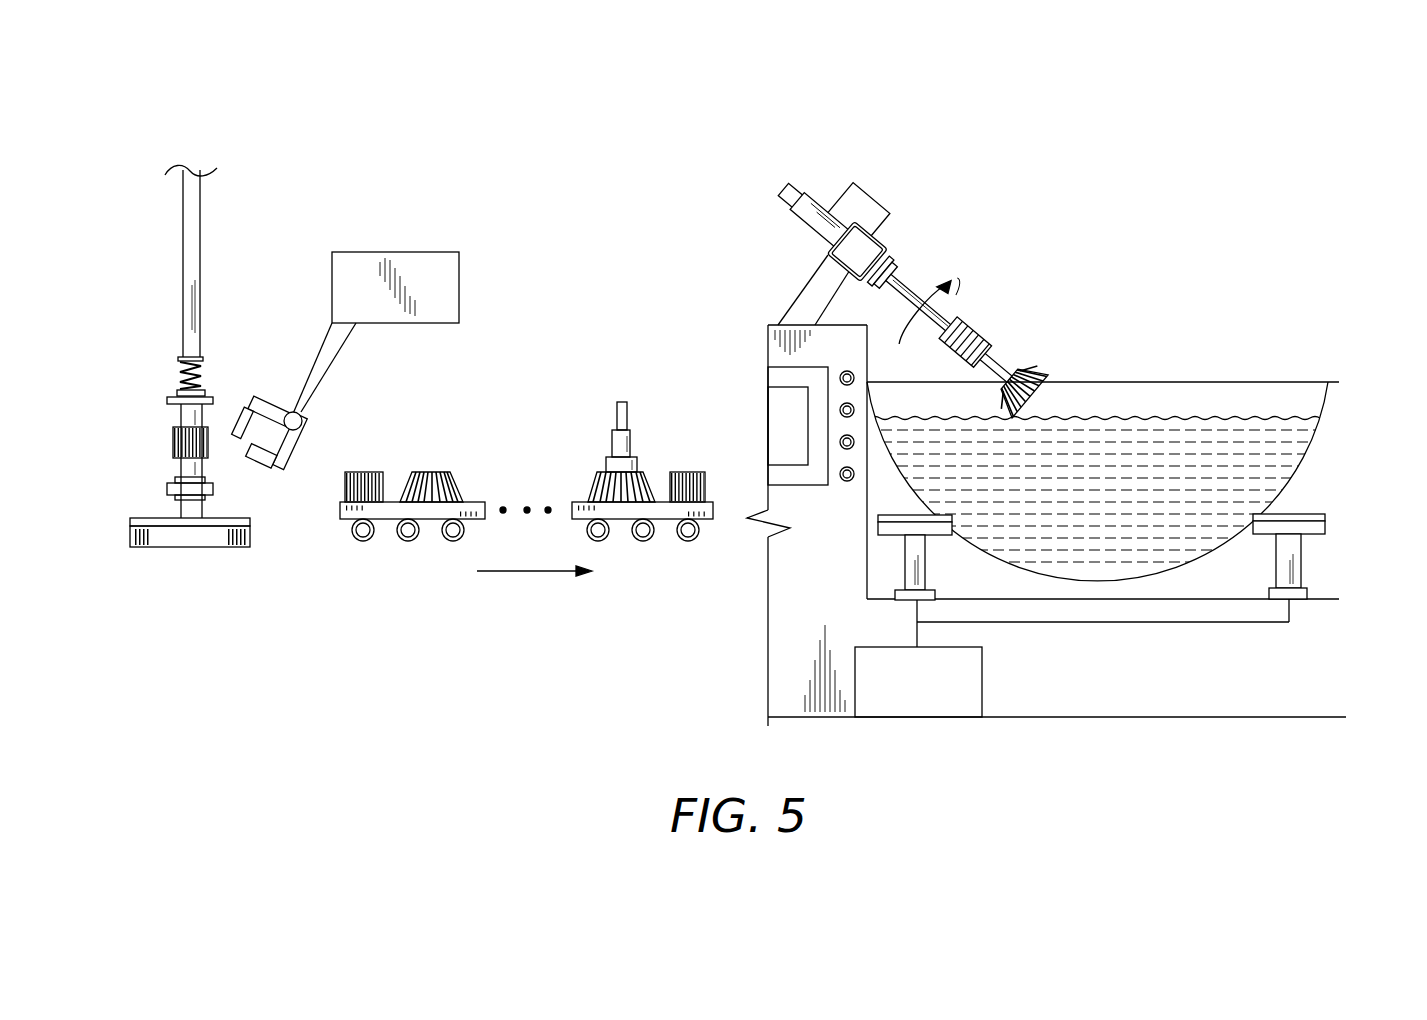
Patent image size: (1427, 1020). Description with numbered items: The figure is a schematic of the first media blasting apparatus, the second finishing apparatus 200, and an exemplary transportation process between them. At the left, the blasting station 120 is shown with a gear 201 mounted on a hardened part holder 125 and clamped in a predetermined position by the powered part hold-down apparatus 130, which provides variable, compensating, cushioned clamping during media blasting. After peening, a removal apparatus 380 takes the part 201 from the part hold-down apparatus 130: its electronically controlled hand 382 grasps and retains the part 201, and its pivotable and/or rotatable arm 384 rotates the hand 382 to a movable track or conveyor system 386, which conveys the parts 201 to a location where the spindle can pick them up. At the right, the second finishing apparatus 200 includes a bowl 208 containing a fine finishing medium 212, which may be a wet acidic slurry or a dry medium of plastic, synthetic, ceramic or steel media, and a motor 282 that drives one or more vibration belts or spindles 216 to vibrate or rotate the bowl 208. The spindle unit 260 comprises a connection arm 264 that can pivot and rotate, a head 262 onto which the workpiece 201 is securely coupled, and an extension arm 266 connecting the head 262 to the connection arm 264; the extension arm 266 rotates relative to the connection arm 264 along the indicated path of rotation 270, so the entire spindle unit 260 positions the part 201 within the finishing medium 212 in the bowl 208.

The blasting station 120 is at (156, 232).
The powered part hold-down apparatus 130 is at (154, 400).
The part holder 125 is at (232, 490).
The gear 201 is at (362, 471).
The removal apparatus 380 is at (348, 236).
The electronically controlled hand 382 is at (289, 411).
The pivotable and/or rotatable arm 384 is at (342, 354).
The movable track or conveyor system 386 is at (622, 552).
The second finishing apparatus 200 is at (1148, 220).
The bowl 208 is at (1328, 396).
The finishing medium 212 is at (1172, 430).
The vibration belts or spindles 216 is at (880, 520).
The motor 282 is at (972, 690).
The spindle unit 260 is at (908, 260).
The connection arm 264 is at (830, 254).
The extension arm 266 is at (928, 292).
The head 262 is at (990, 353).
The path of rotation 270 is at (967, 305).